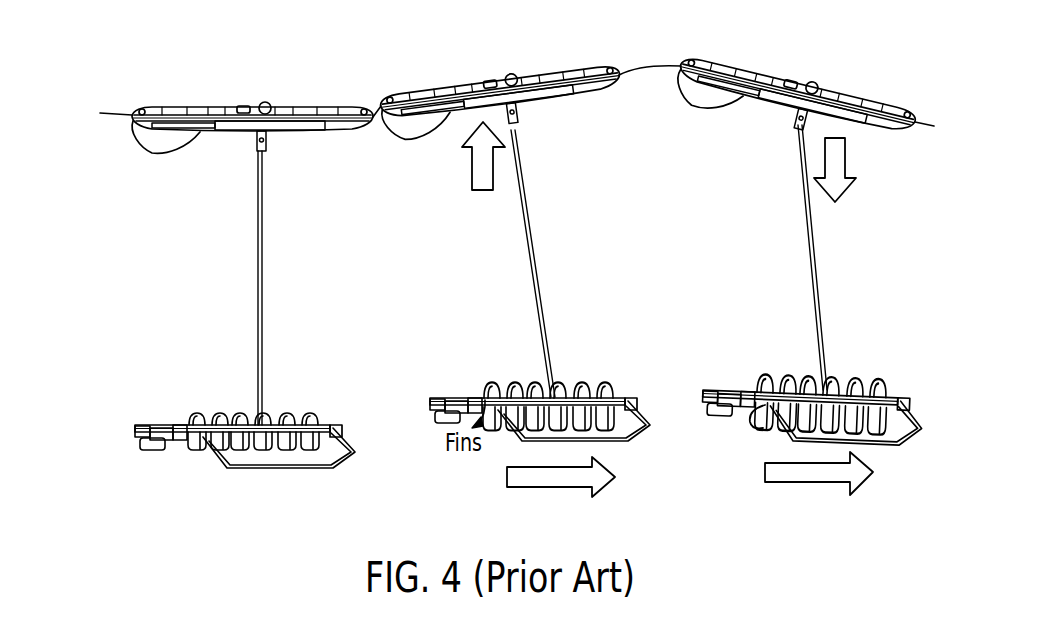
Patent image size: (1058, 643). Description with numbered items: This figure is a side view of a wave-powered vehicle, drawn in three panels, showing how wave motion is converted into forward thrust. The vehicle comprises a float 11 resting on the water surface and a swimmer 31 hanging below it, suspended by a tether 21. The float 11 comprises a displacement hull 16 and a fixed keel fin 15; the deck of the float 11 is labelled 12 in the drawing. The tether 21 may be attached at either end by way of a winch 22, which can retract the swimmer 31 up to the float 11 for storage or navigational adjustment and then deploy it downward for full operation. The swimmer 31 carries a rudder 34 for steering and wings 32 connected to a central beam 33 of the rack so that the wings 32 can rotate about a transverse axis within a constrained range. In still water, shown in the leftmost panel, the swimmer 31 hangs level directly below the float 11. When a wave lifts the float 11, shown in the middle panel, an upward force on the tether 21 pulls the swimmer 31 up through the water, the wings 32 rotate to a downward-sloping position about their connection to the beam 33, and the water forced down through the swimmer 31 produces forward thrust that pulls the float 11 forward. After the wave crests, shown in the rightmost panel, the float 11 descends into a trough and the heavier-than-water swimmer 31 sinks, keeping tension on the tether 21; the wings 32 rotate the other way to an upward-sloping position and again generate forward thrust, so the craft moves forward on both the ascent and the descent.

The float 11 is at (102, 43).
The float body 12 is at (252, 93).
The fixed keel fin 15 is at (164, 161).
The displacement hull 16 is at (252, 154).
The tether 21 is at (263, 270).
The winch 22 is at (288, 153).
The swimmer 31 is at (102, 353).
The wings 32 is at (253, 404).
The central beam 33 is at (288, 429).
The rudder 34 is at (161, 463).